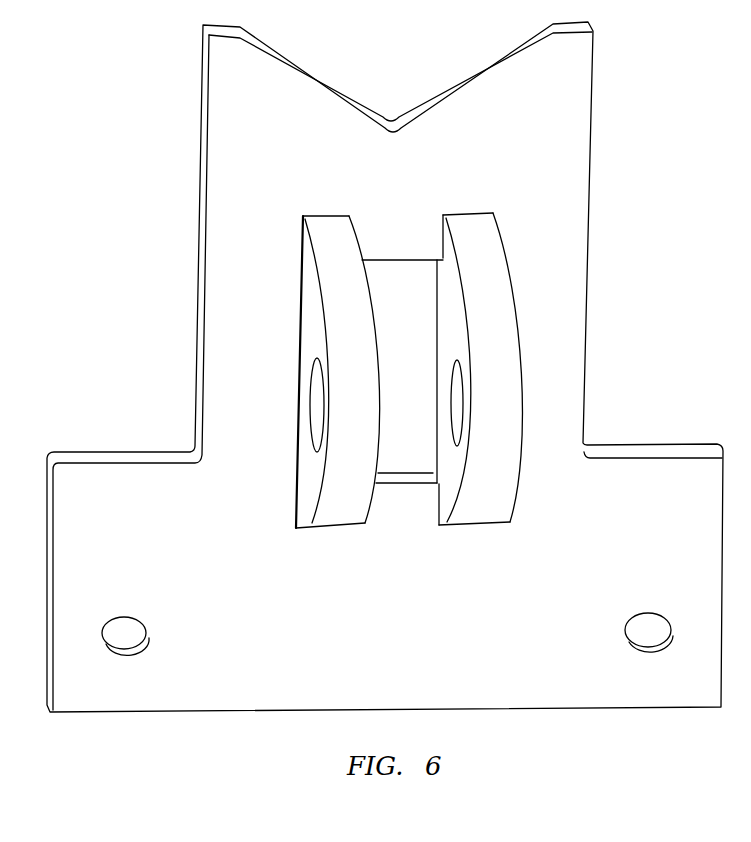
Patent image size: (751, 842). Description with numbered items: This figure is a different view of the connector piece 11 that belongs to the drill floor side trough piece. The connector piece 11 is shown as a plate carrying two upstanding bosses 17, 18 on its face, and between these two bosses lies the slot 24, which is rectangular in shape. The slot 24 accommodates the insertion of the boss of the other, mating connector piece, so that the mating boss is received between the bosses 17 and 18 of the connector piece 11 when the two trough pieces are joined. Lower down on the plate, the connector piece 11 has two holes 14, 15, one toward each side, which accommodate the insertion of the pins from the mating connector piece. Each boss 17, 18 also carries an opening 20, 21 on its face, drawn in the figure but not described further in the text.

The connector piece 11 is at (446, 647).
The hole 14 is at (148, 635).
The hole 15 is at (645, 613).
The boss 17 is at (358, 339).
The boss 18 is at (501, 344).
The pivot hole in left bracket 20 is at (317, 412).
The pivot hole in right bracket 21 is at (453, 393).
The slot 24 is at (405, 453).